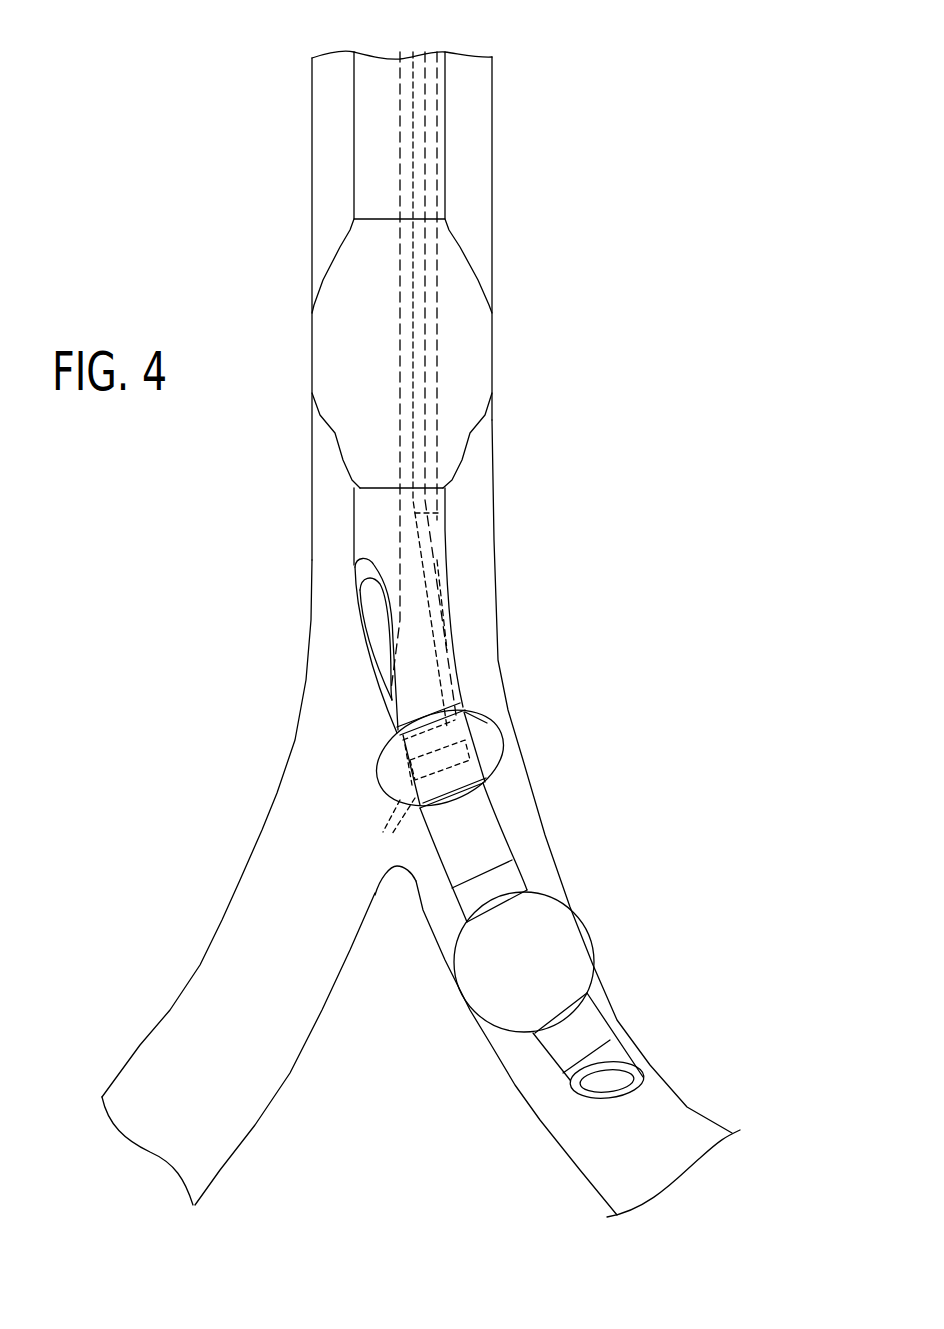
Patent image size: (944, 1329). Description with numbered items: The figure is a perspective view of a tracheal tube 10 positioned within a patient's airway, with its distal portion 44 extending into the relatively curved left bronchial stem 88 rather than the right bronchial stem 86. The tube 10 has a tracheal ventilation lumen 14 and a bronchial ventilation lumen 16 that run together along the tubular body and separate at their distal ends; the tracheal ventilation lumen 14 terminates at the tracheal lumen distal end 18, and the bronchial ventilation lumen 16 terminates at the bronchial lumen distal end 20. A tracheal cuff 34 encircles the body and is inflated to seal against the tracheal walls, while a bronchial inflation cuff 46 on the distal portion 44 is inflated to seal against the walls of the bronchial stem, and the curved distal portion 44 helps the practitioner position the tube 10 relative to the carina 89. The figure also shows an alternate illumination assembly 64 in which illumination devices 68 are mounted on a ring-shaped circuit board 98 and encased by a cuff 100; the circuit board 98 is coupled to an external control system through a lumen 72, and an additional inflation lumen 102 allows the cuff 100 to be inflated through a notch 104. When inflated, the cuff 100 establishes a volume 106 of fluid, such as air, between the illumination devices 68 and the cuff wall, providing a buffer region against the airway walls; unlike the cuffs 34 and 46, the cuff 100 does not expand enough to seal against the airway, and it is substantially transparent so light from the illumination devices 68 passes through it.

The tracheal tube 10 is at (268, 48).
The tracheal ventilation lumen 14 is at (378, 52).
The bronchial ventilation lumen 16 is at (406, 52).
The tracheal lumen distal end 18 is at (338, 612).
The bronchial lumen distal end 20 is at (614, 1110).
The tracheal cuff 34 is at (332, 448).
The distal portion 44 is at (438, 900).
The bronchial inflation cuff 46 is at (496, 1037).
The illumination assembly 64 is at (496, 723).
The illumination devices 68 is at (386, 826).
The lumen 72 is at (440, 513).
The right bronchial stem 86 is at (275, 860).
The left bronchial stem 88 is at (525, 840).
The carina 89 is at (377, 878).
The ring-shaped circuit board 98 is at (395, 736).
The cuff 100 is at (500, 738).
The inflation lumen 102 is at (441, 615).
The notch 104 is at (475, 768).
The volume 106 is at (405, 775).